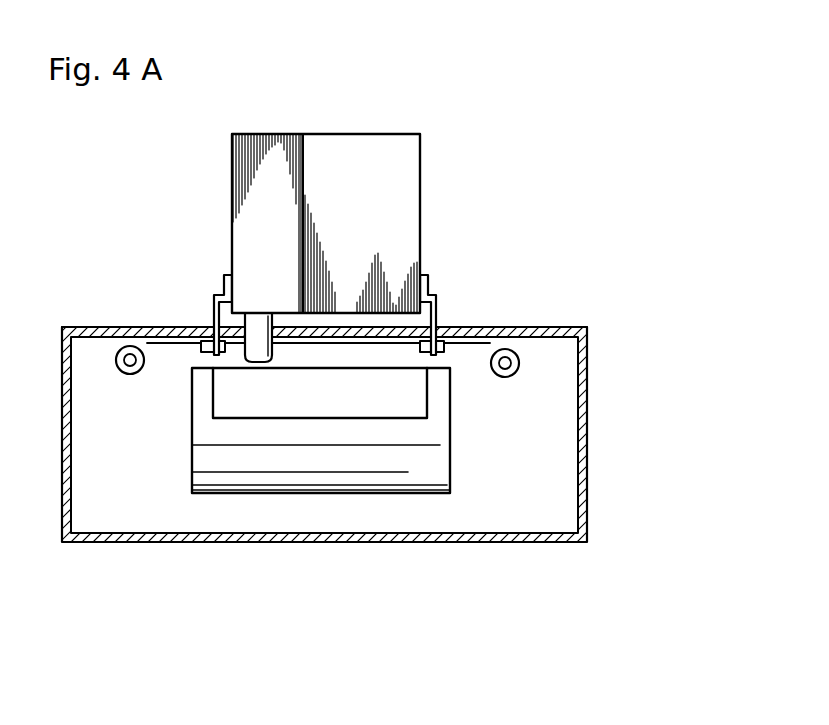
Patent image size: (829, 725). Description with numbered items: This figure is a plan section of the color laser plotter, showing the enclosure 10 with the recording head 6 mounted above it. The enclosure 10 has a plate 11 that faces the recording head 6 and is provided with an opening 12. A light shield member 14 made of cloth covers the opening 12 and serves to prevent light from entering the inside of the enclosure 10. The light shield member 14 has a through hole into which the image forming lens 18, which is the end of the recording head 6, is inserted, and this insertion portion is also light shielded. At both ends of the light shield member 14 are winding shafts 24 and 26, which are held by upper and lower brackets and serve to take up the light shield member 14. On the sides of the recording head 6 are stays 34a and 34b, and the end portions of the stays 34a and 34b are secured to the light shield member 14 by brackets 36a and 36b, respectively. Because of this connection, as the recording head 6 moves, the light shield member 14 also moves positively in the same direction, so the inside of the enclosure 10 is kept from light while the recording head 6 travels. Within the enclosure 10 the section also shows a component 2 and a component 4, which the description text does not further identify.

The battery 2 is at (437, 435).
The battery holder 4 is at (412, 397).
The recording head 6 is at (400, 158).
The enclosure 10 is at (585, 494).
The plate 11 is at (534, 330).
The opening 12 is at (166, 328).
The light shield member 14 is at (465, 337).
The image forming lens 18 is at (262, 323).
The winding shaft 24 is at (123, 360).
The winding shaft 26 is at (518, 360).
The stay 34a is at (213, 306).
The stay 34b is at (437, 293).
The bracket 36a is at (200, 342).
The bracket 36b is at (443, 341).